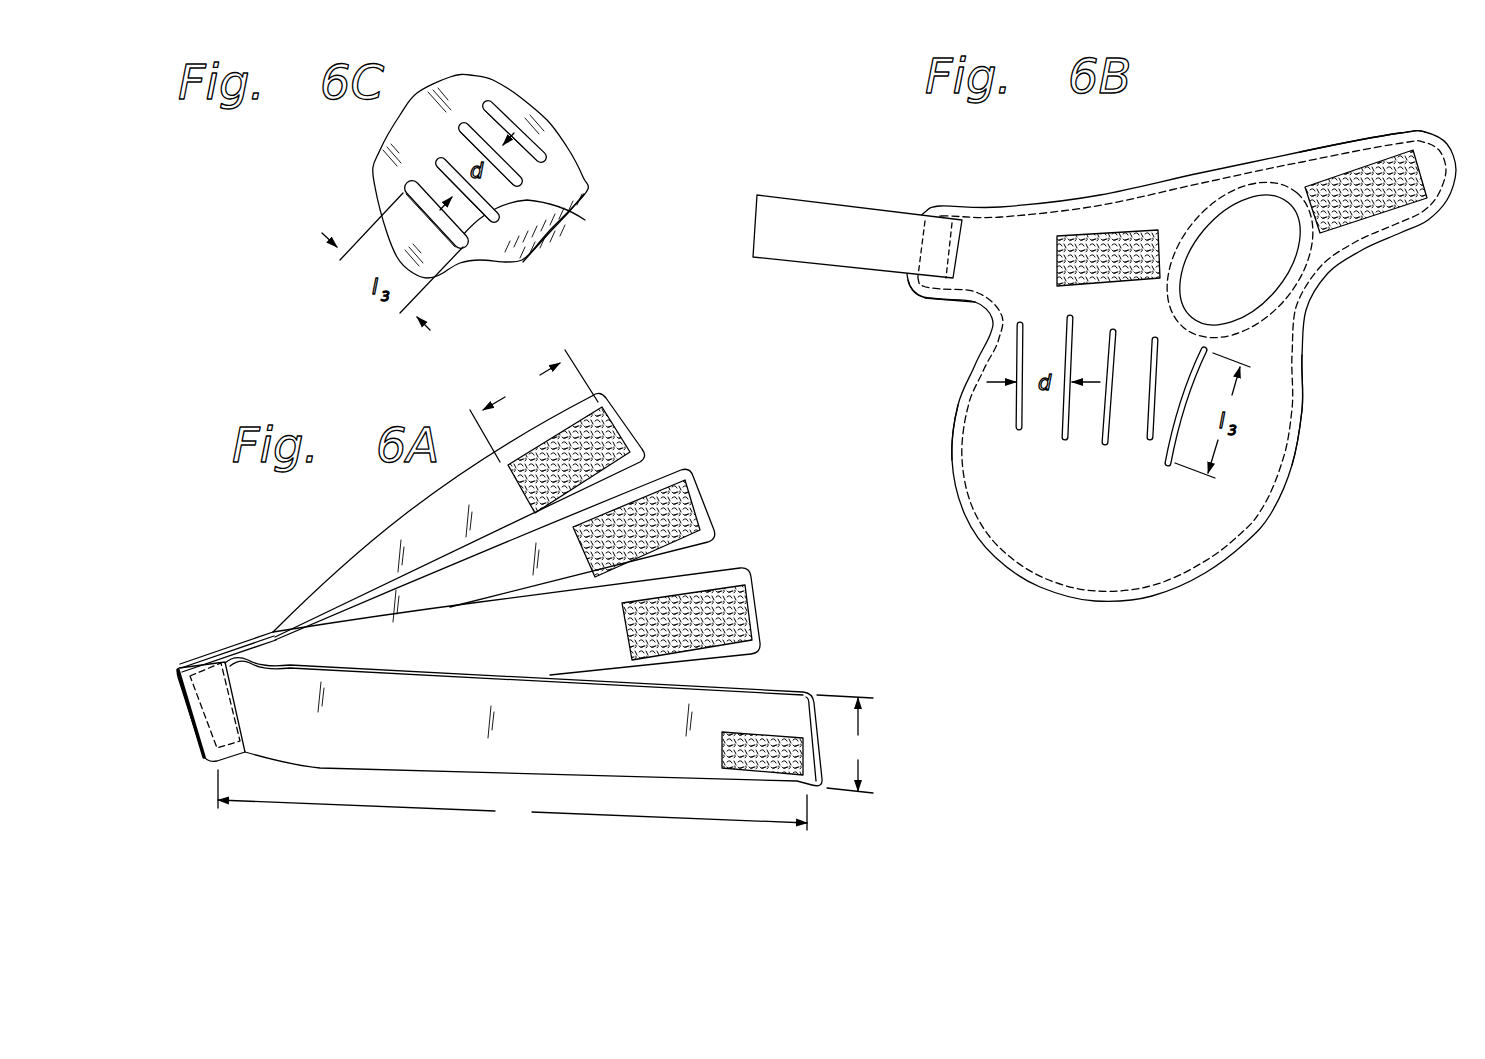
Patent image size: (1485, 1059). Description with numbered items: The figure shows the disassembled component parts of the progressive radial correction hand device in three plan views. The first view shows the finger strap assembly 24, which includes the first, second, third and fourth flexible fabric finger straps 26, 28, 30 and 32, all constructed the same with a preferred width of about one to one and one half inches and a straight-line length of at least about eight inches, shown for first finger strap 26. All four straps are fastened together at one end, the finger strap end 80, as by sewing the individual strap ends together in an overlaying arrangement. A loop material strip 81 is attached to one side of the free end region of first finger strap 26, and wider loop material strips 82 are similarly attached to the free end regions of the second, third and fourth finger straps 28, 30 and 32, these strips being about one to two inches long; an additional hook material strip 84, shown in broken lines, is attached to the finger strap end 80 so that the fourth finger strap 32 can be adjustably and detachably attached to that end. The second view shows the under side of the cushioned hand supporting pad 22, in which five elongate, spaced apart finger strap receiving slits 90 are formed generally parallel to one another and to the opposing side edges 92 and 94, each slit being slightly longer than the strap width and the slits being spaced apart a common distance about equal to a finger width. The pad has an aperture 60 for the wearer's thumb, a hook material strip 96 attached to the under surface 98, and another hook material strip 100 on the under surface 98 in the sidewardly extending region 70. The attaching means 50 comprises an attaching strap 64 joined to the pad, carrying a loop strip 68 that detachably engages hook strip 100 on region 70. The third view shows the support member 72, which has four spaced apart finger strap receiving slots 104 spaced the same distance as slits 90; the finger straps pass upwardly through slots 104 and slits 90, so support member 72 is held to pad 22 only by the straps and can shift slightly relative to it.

In FIG. 6B, the hand supporting pad 22 is at (1257, 155).
In FIG. 6A, the finger strap assembly 24 is at (316, 558).
In FIG. 6A, the first finger strap 26 is at (787, 688).
In FIG. 6A, the second finger strap 28 is at (763, 632).
In FIG. 6A, the third finger strap 30 is at (713, 520).
In FIG. 6A, the fourth finger strap 32 is at (637, 437).
In FIG. 6B, the attaching means 50 is at (844, 198).
In FIG. 6B, the aperture 60 is at (1244, 286).
In FIG. 6B, the attaching strap 64 is at (783, 197).
In FIG. 6B, the loop strip 68 is at (933, 303).
In FIG. 6B, the sidewardly extending region 70 is at (1347, 140).
In FIG. 6C, the support member 72 is at (586, 147).
In FIG. 6A, the finger strap end 80 is at (188, 716).
In FIG. 6A, the loop material strip 81 is at (795, 768).
In FIG. 6A, the loop material strips 82 is at (598, 425).
In FIG. 6A, the hook material strip 84 is at (206, 660).
In FIG. 6B, the slits 90 is at (1021, 352).
In FIG. 6B, the side edge 92 is at (952, 443).
In FIG. 6B, the side edge 94 is at (1305, 410).
In FIG. 6B, the hook material strip 96 is at (1092, 233).
In FIG. 6B, the under surface 98 is at (1033, 277).
In FIG. 6B, the hook material strip 100 is at (1420, 167).
In FIG. 6C, the slots 104 is at (477, 140).